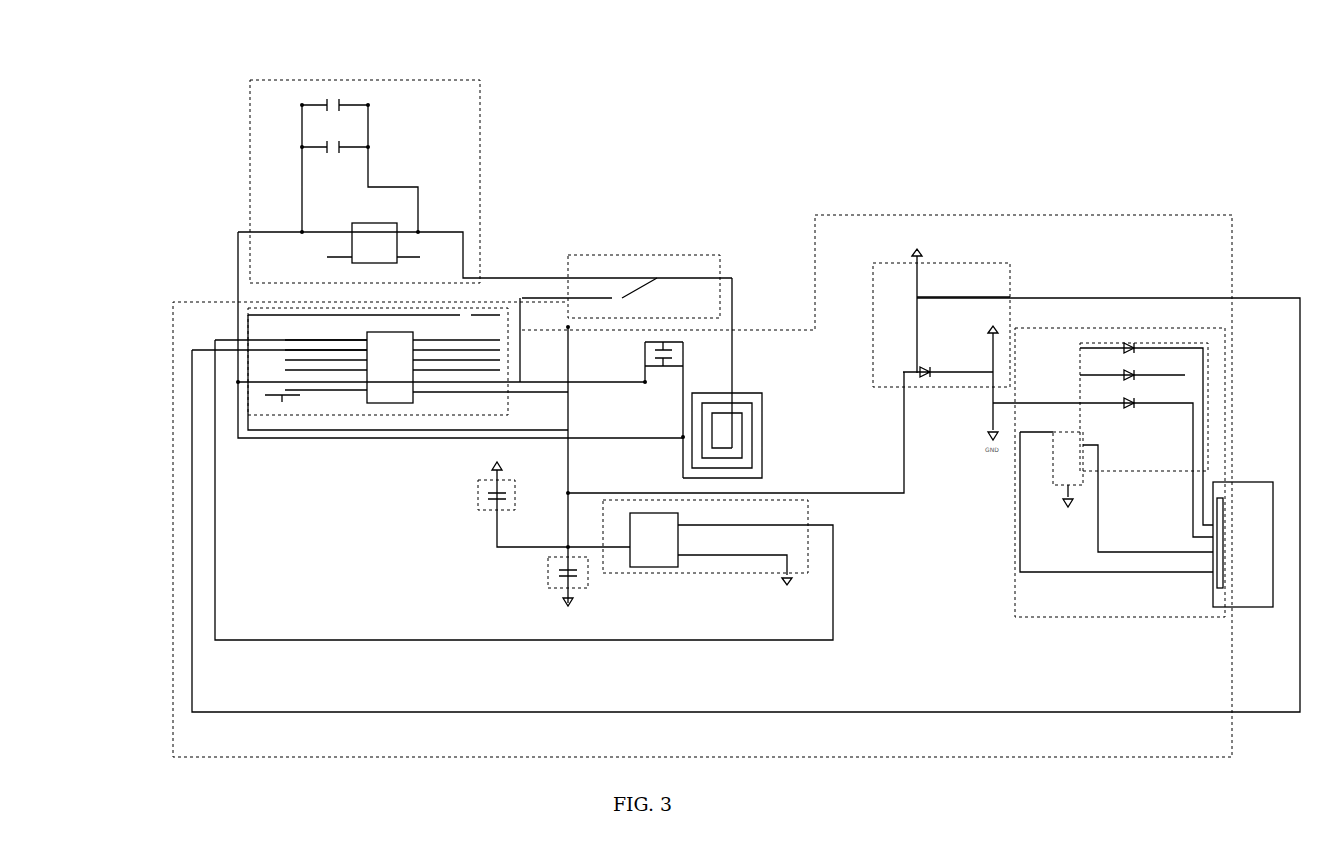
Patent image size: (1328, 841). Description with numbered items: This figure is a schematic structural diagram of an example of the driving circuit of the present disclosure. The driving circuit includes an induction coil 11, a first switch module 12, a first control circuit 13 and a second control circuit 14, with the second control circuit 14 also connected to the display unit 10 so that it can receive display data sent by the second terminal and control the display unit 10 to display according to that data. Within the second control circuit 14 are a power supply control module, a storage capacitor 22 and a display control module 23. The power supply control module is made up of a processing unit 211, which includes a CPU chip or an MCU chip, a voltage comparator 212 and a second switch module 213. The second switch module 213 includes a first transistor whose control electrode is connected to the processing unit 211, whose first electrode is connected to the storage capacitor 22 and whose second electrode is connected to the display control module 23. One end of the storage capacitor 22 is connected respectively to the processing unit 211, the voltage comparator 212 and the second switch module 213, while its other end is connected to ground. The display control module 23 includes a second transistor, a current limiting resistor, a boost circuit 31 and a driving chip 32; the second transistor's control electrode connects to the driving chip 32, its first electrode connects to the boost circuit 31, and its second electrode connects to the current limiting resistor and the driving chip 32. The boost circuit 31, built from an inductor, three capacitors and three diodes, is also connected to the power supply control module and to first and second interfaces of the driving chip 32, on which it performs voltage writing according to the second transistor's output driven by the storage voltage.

The display unit 10 is at (1253, 482).
The induction coil 11 is at (753, 393).
The first switch module 12 is at (653, 255).
The first control circuit 13 is at (360, 80).
The second control circuit 14 is at (995, 215).
The processing unit 211 is at (248, 325).
The voltage comparator 212 is at (707, 573).
The second switch module 213 is at (888, 263).
The storage capacitor 22 is at (478, 492).
The display control module 23 is at (1030, 327).
The boost circuit 31 is at (1043, 390).
The driving chip 32 is at (1213, 610).